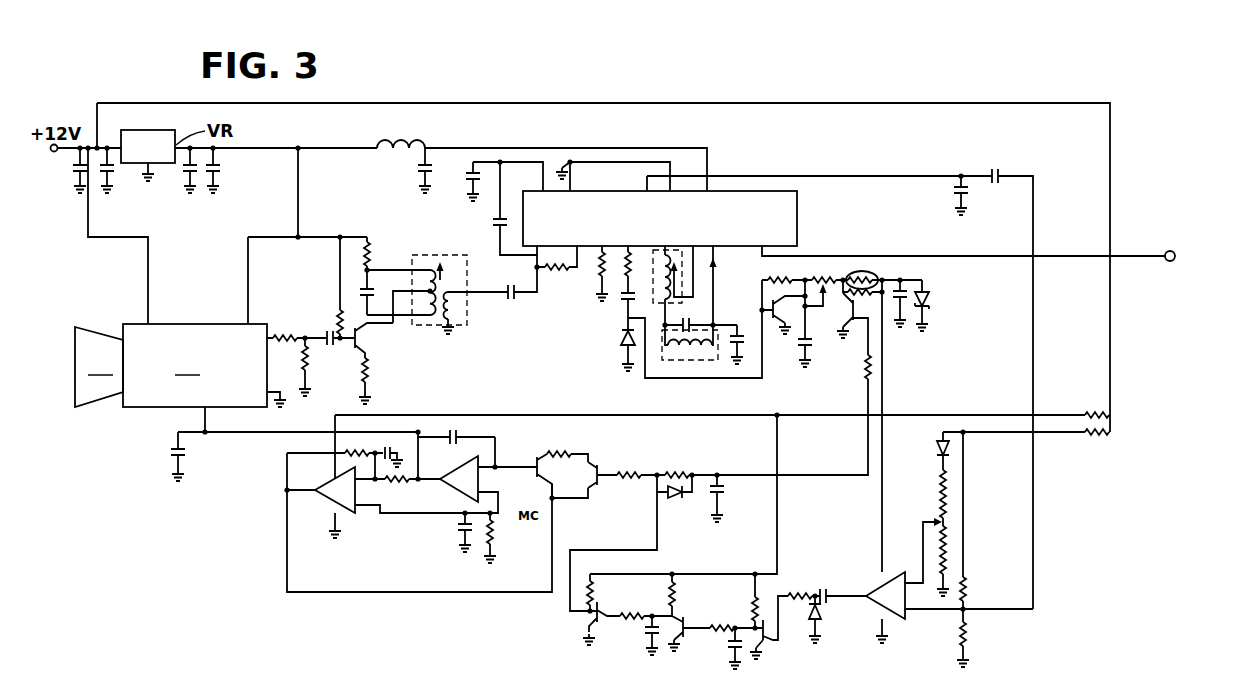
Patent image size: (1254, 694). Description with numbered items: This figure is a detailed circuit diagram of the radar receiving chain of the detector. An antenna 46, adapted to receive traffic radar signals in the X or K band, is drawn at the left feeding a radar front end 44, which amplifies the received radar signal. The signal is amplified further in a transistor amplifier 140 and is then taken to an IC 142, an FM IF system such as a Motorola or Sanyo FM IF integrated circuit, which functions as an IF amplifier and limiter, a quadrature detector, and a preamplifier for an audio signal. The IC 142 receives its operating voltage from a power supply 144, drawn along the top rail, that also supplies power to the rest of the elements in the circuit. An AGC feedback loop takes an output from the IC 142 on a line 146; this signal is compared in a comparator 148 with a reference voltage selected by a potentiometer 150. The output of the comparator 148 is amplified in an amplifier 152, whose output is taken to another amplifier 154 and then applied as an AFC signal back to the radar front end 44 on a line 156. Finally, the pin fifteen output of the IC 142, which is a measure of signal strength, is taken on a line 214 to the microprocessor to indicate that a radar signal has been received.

The radar front end 44 is at (204, 365).
The antenna 46 is at (99, 367).
The transistor amplifier 140 is at (370, 333).
The IC 142 is at (797, 214).
The power supply 144 is at (135, 131).
The line 146 is at (870, 178).
The comparator 148 is at (875, 603).
The potentiometer 150 is at (940, 522).
The amplifier 152 is at (728, 610).
The amplifier 154 is at (424, 504).
The line 156 is at (232, 436).
The line 214 is at (1128, 258).